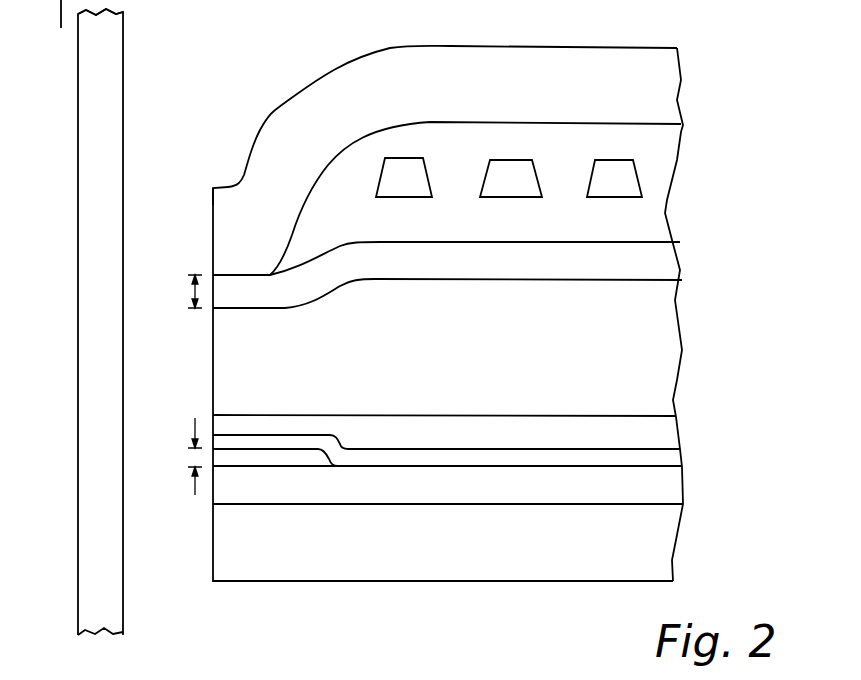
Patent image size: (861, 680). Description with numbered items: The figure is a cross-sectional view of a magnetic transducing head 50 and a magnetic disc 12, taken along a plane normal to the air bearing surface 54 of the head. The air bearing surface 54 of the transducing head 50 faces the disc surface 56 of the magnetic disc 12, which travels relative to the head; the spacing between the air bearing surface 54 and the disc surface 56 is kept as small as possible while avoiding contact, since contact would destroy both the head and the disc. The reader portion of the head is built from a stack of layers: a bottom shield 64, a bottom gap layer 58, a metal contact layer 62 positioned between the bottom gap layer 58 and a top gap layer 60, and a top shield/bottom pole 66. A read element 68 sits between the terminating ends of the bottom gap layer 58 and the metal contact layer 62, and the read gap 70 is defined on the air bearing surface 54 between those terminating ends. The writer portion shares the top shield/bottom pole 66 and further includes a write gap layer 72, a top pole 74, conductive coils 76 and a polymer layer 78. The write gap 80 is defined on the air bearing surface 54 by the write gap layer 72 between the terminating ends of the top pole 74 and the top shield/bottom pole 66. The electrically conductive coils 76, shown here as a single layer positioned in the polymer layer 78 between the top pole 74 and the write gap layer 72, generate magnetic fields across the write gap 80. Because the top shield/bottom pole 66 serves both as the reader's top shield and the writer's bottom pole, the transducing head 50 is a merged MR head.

The magnetic disc 12 is at (112, 92).
The magnetic transducing head 50 is at (692, 52).
The air bearing surface 54 is at (212, 202).
The disc surface 56 is at (125, 25).
The bottom gap layer 58 is at (574, 499).
The top gap layer 60 is at (578, 446).
The metal contact layer 62 is at (660, 455).
The bottom shield 64 is at (578, 559).
The top shield/bottom pole 66 is at (578, 367).
The read element 68 is at (254, 456).
The read gap 70 is at (177, 461).
The write gap layer 72 is at (576, 272).
The top pole 74 is at (614, 97).
The conductive coil 76 is at (414, 191).
The polymer layer 78 is at (576, 234).
The write gap 80 is at (177, 291).